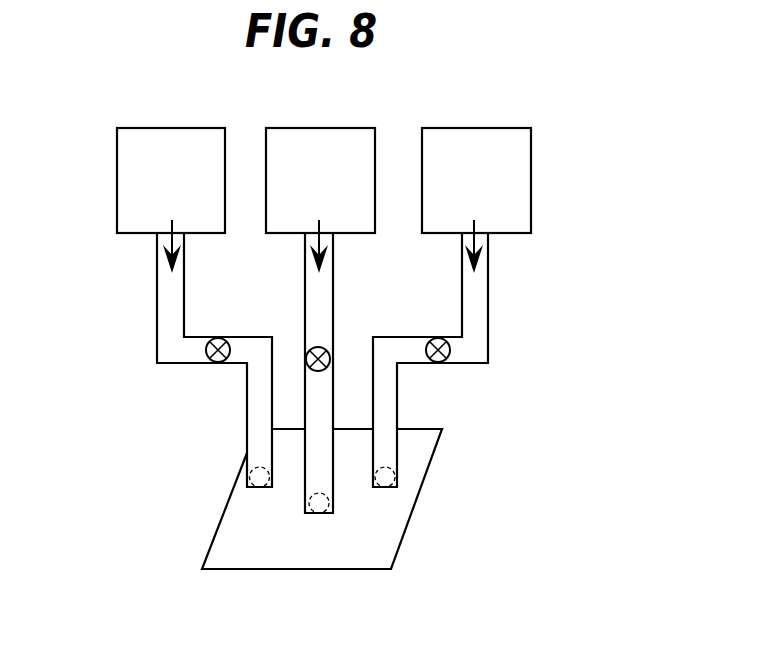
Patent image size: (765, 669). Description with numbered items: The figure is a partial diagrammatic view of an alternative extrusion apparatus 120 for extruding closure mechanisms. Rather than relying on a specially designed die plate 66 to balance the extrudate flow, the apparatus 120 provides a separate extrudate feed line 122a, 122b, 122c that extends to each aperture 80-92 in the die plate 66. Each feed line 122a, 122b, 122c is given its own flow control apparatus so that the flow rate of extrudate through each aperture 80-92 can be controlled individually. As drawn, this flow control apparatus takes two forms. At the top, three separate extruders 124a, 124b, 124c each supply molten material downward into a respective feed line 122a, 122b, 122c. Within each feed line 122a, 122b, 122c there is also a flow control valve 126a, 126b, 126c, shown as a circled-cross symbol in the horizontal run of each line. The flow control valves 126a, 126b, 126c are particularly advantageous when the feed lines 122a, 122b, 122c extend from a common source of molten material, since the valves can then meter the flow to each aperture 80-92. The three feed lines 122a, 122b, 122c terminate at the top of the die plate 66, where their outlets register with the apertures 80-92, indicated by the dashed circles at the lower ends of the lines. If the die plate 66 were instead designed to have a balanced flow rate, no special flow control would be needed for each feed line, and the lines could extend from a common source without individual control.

The extruder 124a is at (200, 190).
The extruder 124b is at (349, 190).
The extruder 124c is at (505, 190).
The extrudate feed line 122a is at (177, 366).
The extrudate feed line 122b is at (333, 308).
The extrudate feed line 122c is at (488, 289).
The flow control valve 126a is at (218, 338).
The flow control valve 126b is at (324, 369).
The flow control valve 126c is at (450, 351).
The apertures 80-92 is at (257, 468).
The die plate 66 is at (240, 515).
The alternative extrusion apparatus 120 is at (459, 473).